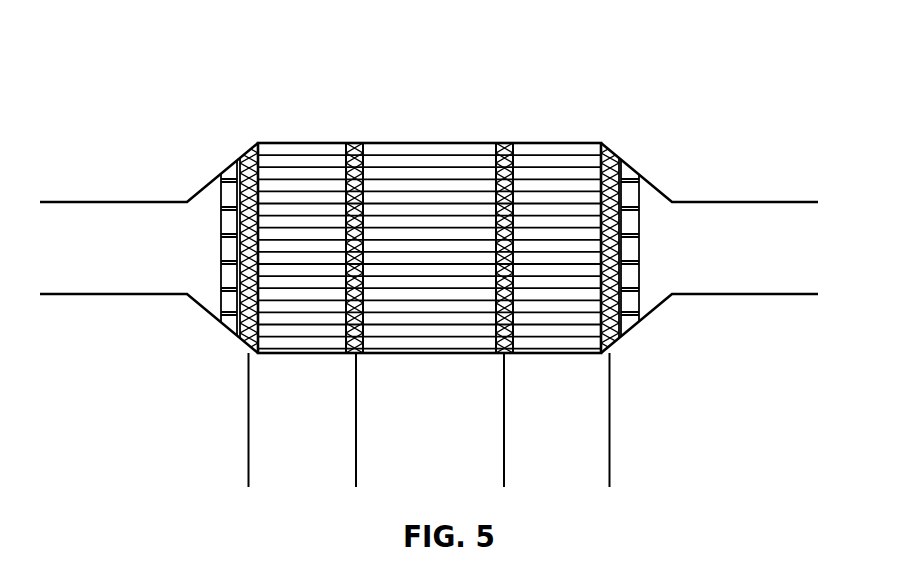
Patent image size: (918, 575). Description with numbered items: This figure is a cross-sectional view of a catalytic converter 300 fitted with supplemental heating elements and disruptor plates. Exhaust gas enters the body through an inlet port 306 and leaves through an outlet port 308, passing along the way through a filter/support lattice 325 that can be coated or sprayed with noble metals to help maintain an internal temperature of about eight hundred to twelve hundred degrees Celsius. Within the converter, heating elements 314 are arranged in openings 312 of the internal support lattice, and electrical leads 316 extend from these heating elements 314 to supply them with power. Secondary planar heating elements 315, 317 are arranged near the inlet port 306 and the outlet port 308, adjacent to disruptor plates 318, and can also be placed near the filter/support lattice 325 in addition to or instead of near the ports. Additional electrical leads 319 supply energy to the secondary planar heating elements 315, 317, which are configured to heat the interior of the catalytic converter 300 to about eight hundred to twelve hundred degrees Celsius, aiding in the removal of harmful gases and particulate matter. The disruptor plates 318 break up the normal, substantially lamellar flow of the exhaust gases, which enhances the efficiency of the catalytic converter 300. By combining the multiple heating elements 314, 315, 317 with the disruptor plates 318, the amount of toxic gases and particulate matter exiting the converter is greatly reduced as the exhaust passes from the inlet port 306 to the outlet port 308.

The catalytic converter 300 is at (640, 59).
The inlet port 306 is at (697, 202).
The outlet port 308 is at (157, 201).
The openings 312 is at (368, 134).
The heating elements 314 is at (350, 142).
The secondary planar heating element 315 is at (248, 148).
The electrical leads 316 is at (356, 422).
The secondary planar heating element 317 is at (610, 163).
The disruptor plates 318 is at (232, 298).
The additional electrical leads 319 is at (248, 472).
The filter/support lattice 325 is at (320, 157).